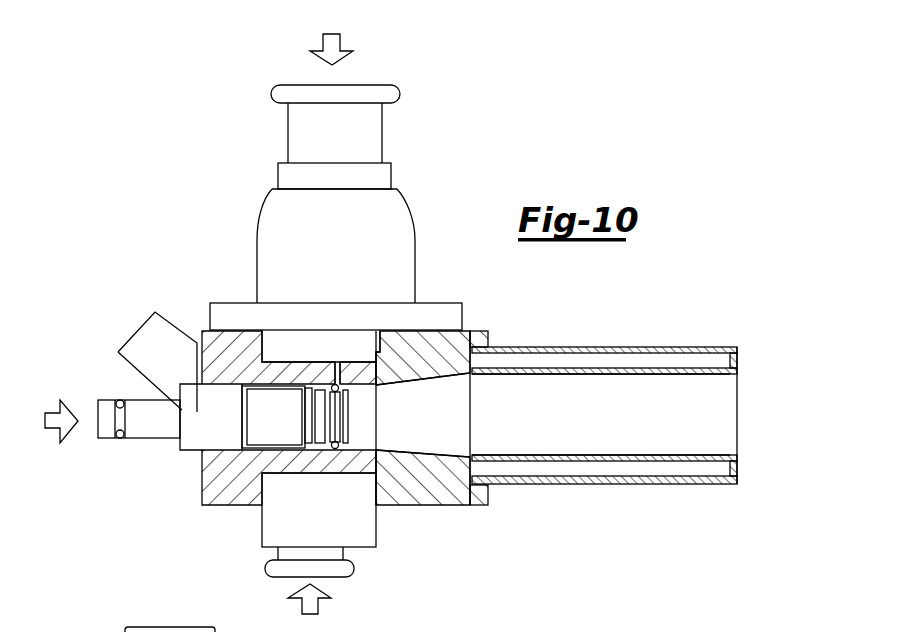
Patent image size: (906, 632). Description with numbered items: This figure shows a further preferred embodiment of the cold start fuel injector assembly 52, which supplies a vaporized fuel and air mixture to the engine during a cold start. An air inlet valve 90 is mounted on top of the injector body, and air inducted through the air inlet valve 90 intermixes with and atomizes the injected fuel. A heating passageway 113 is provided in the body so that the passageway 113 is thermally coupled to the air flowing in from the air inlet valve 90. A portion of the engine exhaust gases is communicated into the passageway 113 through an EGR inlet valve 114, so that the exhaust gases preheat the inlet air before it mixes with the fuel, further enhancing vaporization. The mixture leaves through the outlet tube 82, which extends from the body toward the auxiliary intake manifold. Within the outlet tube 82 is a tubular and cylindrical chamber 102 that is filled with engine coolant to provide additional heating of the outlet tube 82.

The air inlet valve 90 is at (380, 137).
The heating passageway 113 is at (281, 343).
The outlet tube 82 is at (192, 452).
The tubular and cylindrical chamber 102 is at (705, 468).
The cold start fuel injector assembly 52 is at (160, 471).
The EGR inlet valve 114 is at (366, 533).